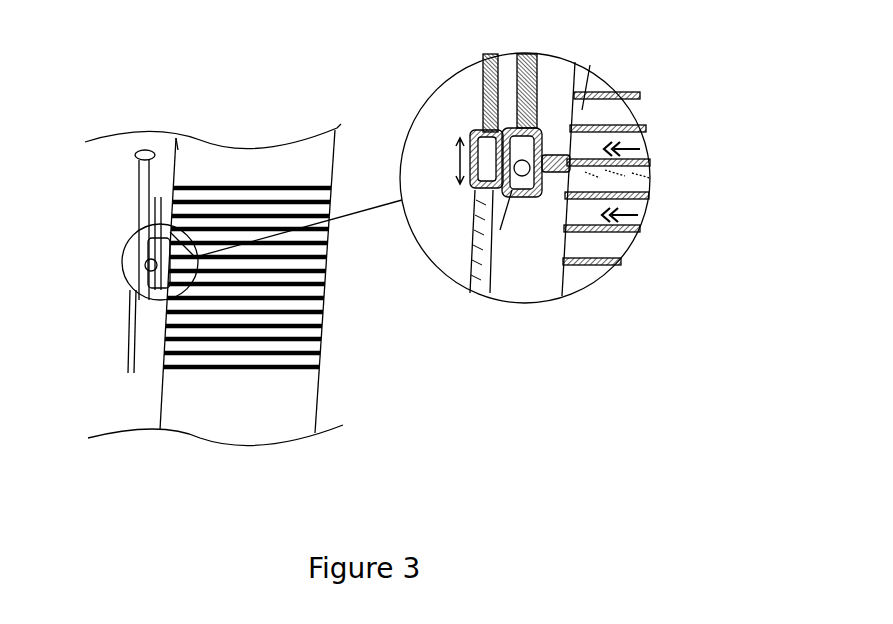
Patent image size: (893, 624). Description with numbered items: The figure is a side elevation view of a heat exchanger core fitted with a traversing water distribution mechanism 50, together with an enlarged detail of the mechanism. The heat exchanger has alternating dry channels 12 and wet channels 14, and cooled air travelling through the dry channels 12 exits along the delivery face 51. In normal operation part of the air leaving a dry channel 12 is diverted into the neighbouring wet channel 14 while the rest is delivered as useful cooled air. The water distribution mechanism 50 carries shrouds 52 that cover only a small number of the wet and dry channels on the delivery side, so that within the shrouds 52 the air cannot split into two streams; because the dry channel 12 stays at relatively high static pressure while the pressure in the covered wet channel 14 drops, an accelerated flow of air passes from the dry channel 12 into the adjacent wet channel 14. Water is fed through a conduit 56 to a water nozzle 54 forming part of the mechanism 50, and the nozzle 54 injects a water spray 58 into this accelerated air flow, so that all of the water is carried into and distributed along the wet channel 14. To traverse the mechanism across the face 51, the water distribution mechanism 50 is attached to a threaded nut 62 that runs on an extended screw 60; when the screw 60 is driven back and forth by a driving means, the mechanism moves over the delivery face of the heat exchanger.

The dry channel 12 is at (207, 192).
The wet channel 14 is at (257, 190).
The water distribution mechanism 50 is at (428, 52).
The face 51 is at (177, 145).
The shroud 52 is at (163, 243).
The water nozzle 54 is at (512, 190).
The conduit 56 is at (157, 197).
The water spray 58 is at (585, 172).
The extended screw 60 is at (127, 343).
The threaded nut 62 is at (142, 263).